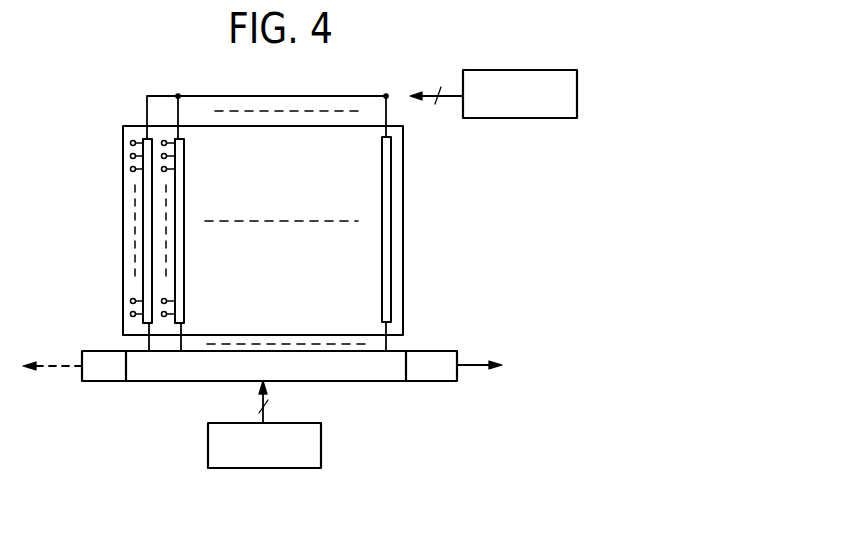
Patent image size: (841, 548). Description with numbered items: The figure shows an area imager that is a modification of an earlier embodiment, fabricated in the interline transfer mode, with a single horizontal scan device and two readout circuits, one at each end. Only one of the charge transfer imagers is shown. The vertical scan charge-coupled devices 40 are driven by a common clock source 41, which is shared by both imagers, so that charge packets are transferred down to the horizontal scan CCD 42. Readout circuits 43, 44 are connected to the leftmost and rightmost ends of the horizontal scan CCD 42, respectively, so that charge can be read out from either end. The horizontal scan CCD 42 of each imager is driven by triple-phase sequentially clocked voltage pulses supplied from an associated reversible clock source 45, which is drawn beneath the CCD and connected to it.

The vertical scan charge-coupled devices 40 is at (142, 137).
The common clock source 41 is at (520, 70).
The horizontal scan CCD 42 is at (370, 381).
The readout circuit 43 is at (107, 381).
The readout circuit 44 is at (445, 381).
The reversible clock source 45 is at (321, 453).